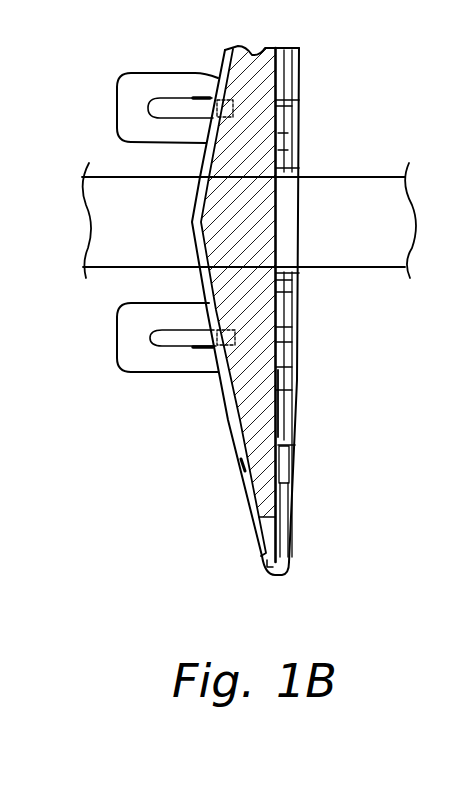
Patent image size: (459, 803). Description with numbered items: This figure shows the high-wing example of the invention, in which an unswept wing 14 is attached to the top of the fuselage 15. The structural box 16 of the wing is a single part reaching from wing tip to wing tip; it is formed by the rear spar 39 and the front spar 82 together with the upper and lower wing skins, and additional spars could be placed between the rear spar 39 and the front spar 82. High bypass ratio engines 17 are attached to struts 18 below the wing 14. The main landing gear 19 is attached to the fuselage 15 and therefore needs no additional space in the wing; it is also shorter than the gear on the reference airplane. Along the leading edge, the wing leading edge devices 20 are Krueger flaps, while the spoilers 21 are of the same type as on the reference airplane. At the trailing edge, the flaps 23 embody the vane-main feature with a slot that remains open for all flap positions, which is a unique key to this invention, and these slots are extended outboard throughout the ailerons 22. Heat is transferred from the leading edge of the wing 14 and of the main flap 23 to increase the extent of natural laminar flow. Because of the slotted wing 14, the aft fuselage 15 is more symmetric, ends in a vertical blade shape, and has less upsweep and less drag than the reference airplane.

The unswept wing 14 is at (267, 572).
The fuselage 15 is at (127, 257).
The structural box 16 is at (250, 382).
The high bypass ratio engines 17 is at (122, 343).
The struts 18 is at (172, 340).
The main landing gear 19 is at (290, 288).
The wing leading edge devices 20 is at (238, 488).
The spoilers 21 is at (288, 368).
The ailerons 22 is at (290, 523).
The flaps 23 is at (292, 327).
The rear spar 39 is at (280, 445).
The front spar 82 is at (240, 466).